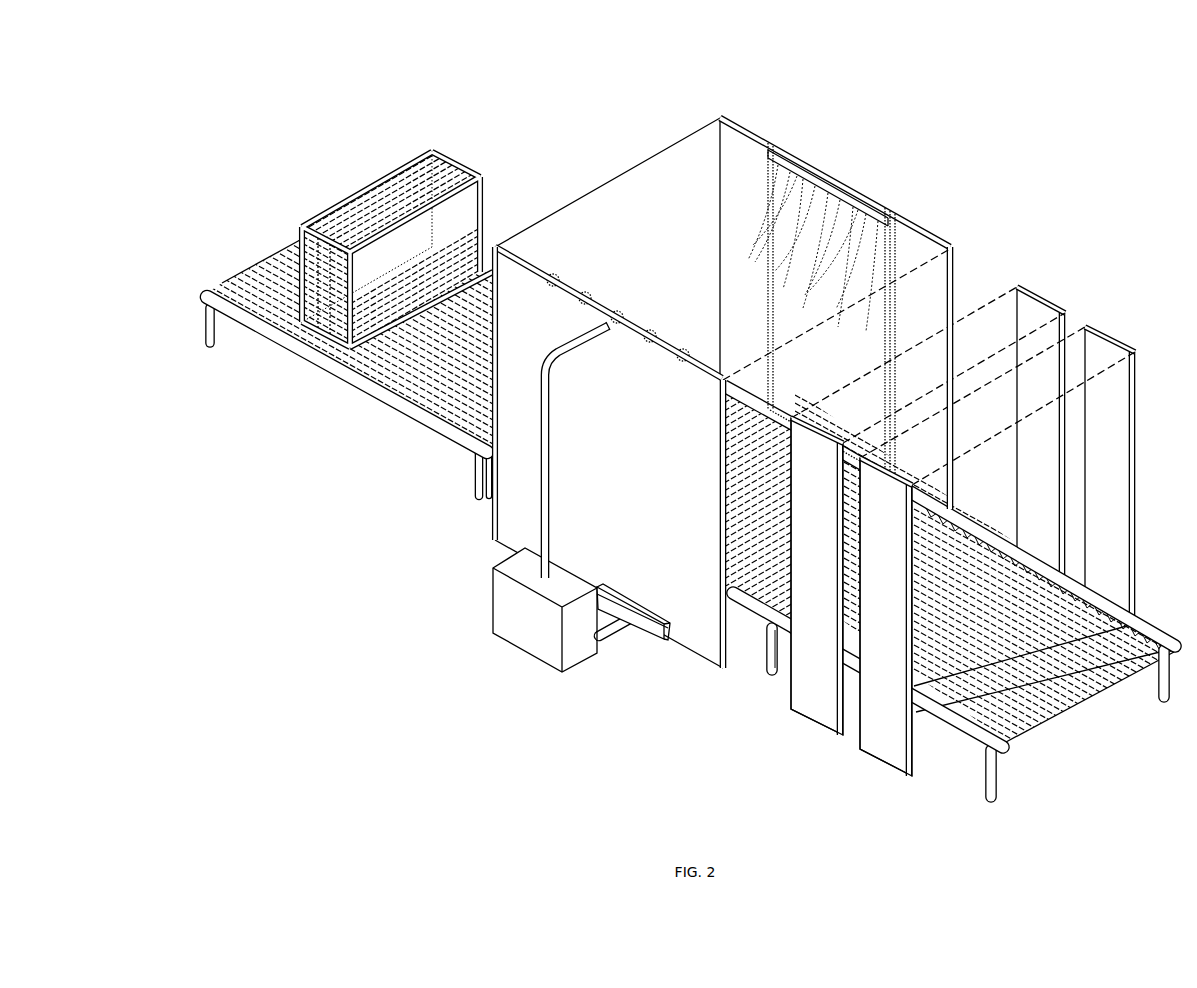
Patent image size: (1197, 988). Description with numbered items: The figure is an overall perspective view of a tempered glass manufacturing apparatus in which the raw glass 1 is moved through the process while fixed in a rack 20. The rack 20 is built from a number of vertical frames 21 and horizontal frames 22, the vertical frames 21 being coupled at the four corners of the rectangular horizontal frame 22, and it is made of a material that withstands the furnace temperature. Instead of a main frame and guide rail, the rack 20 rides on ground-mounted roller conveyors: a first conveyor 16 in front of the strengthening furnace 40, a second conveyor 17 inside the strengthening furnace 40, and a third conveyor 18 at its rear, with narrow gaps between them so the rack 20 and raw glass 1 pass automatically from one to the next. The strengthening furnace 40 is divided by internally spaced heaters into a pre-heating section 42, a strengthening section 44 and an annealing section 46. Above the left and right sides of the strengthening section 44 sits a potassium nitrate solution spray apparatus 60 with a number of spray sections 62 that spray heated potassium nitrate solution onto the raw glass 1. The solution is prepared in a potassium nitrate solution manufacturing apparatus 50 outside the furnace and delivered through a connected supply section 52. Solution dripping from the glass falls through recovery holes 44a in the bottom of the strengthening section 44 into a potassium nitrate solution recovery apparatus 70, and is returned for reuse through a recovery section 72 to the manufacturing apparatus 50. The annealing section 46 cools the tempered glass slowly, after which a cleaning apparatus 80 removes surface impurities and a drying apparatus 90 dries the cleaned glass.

The raw glass 1 is at (350, 307).
The first conveyor 16 is at (350, 307).
The second conveyor 17 is at (730, 648).
The third conveyor 18 is at (957, 745).
The rack 20 is at (285, 420).
The vertical frame 21 is at (382, 272).
The horizontal frame 22 is at (300, 357).
The strengthening furnace 40 is at (773, 352).
The pre-heating section 42 is at (738, 140).
The strengthening section 44 is at (846, 310).
The recovery holes 44a is at (797, 412).
The annealing section 46 is at (935, 262).
The potassium nitrate solution manufacturing apparatus 50 is at (493, 602).
The supply section 52 is at (538, 487).
The potassium nitrate solution spray apparatus 60 is at (822, 172).
The spray sections 62 is at (795, 172).
The potassium nitrate solution recovery apparatus 70 is at (648, 640).
The recovery section 72 is at (616, 643).
The cleaning apparatus 80 is at (813, 672).
The drying apparatus 90 is at (880, 735).